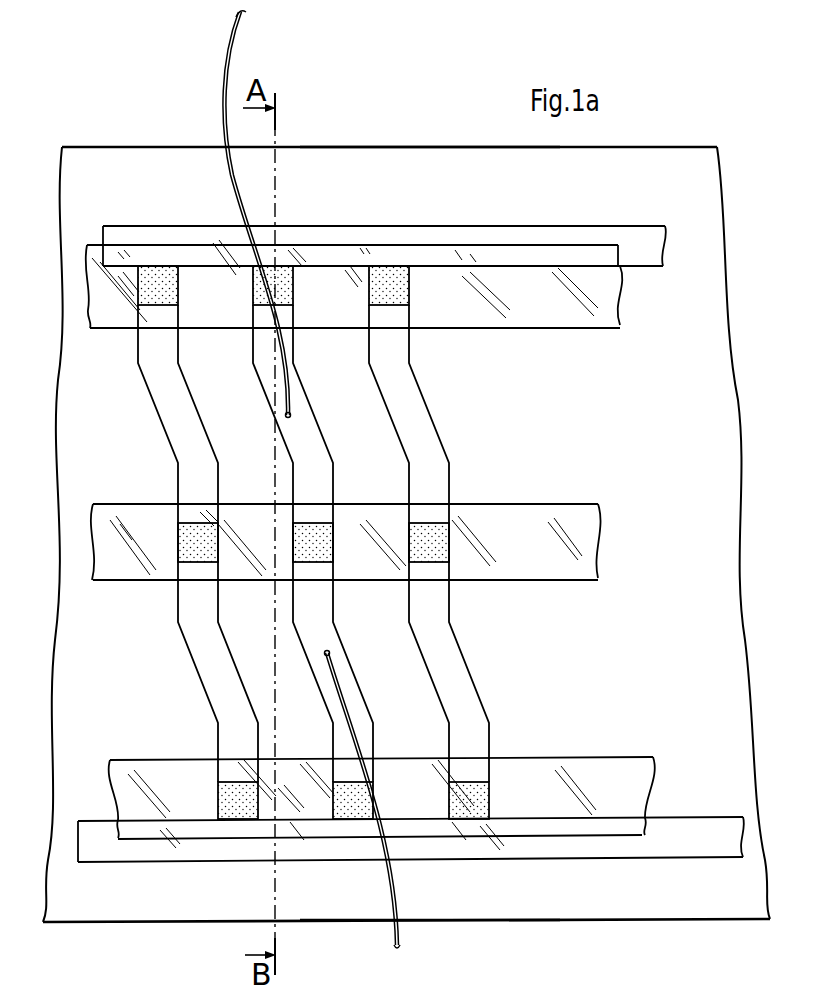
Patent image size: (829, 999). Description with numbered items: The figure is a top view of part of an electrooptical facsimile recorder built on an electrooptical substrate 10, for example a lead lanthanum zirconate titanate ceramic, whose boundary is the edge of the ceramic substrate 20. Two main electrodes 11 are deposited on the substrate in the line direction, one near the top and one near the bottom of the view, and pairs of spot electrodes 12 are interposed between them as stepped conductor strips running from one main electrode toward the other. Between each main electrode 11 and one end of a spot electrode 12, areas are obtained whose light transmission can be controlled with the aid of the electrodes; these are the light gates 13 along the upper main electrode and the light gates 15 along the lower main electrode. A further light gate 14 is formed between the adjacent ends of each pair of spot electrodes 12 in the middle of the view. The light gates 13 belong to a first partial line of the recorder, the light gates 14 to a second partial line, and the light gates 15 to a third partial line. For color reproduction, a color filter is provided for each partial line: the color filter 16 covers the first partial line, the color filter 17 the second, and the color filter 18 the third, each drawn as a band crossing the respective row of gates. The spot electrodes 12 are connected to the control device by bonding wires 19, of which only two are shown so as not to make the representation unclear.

The electrooptical substrate 10 is at (670, 168).
The main electrode 11 is at (608, 230).
The spot electrode 12 is at (178, 630).
The light gate 13 is at (263, 282).
The light gate 14 is at (415, 539).
The light gate 15 is at (455, 800).
The color filter 16 is at (541, 312).
The color filter 17 is at (567, 512).
The color filter 18 is at (527, 775).
The bonding wire 19 is at (224, 80).
The edge of the ceramic substrate 20 is at (413, 146).